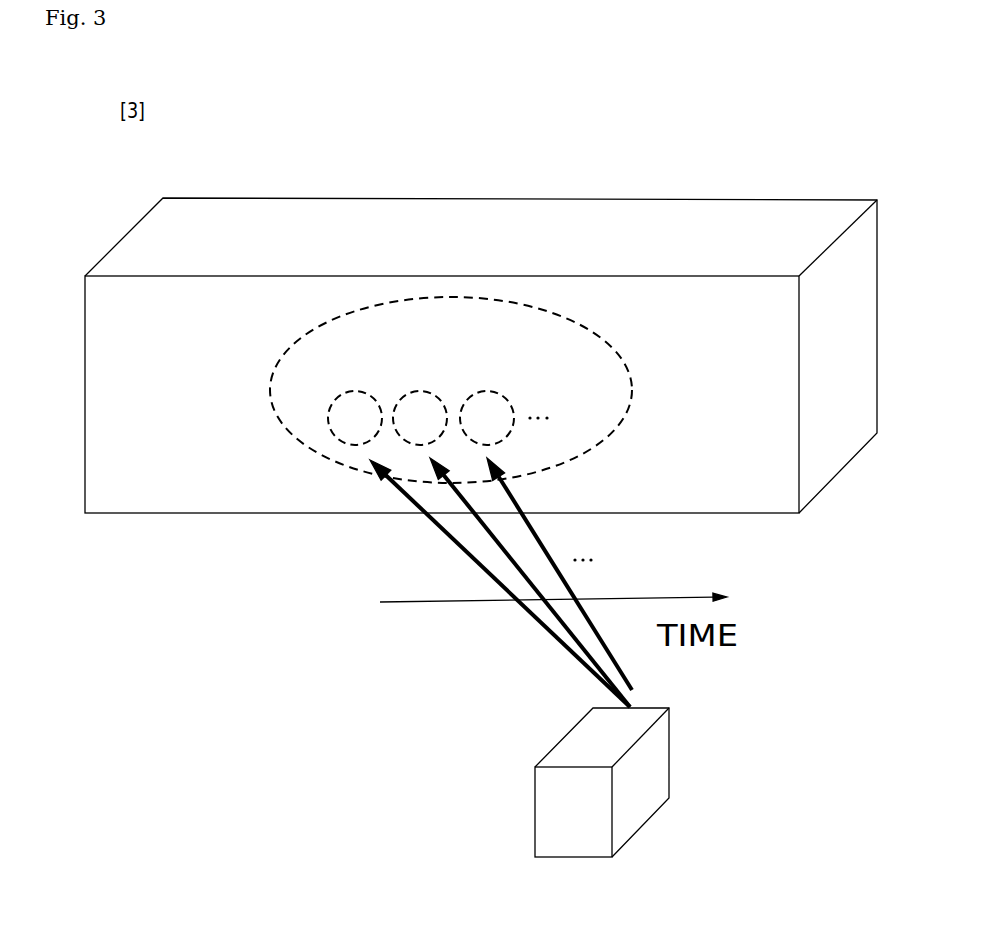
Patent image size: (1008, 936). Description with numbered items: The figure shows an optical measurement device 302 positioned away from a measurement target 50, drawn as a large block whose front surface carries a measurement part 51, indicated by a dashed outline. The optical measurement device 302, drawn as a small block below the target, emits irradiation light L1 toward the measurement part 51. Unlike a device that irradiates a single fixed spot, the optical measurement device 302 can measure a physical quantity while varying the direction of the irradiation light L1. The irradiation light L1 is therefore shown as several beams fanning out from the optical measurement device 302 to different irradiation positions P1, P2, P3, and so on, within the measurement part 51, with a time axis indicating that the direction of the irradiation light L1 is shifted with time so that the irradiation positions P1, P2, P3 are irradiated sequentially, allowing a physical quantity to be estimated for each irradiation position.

The measurement target 50 is at (276, 198).
The measurement part 51 is at (305, 338).
The irradiation position P1 is at (355, 418).
The irradiation position P2 is at (420, 418).
The irradiation position P3 is at (487, 418).
The irradiation light L1 is at (540, 625).
The optical measurement device 302 is at (535, 796).